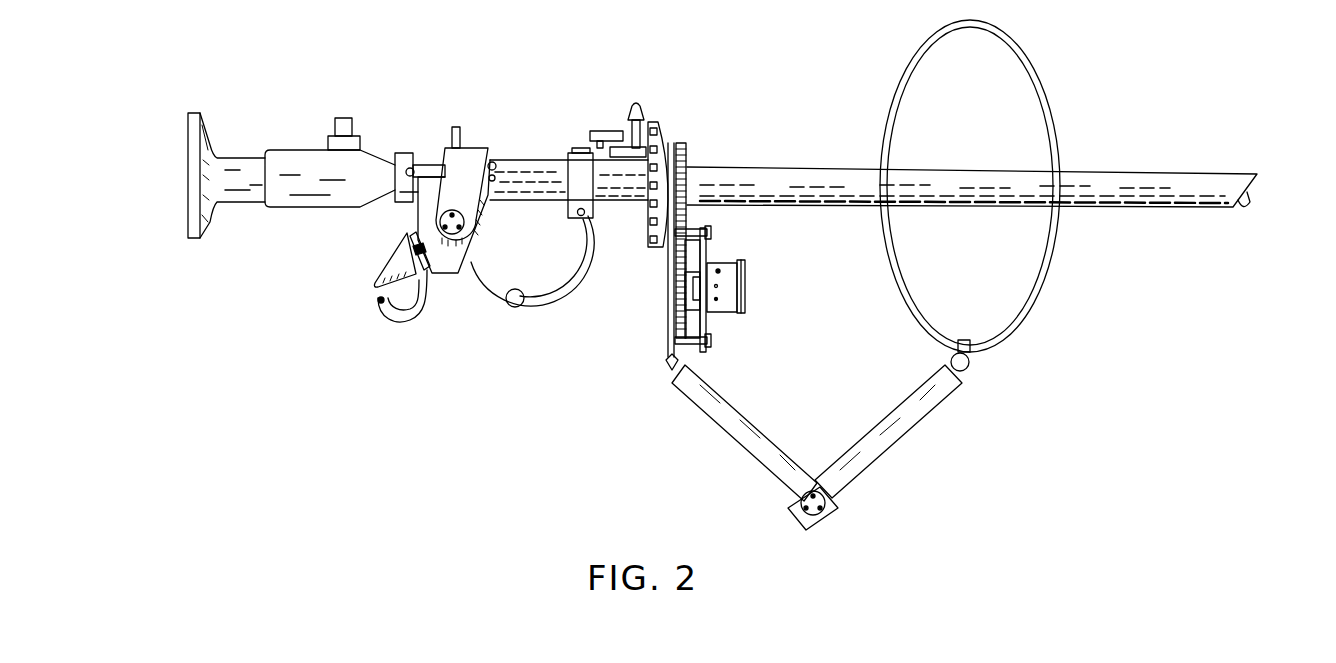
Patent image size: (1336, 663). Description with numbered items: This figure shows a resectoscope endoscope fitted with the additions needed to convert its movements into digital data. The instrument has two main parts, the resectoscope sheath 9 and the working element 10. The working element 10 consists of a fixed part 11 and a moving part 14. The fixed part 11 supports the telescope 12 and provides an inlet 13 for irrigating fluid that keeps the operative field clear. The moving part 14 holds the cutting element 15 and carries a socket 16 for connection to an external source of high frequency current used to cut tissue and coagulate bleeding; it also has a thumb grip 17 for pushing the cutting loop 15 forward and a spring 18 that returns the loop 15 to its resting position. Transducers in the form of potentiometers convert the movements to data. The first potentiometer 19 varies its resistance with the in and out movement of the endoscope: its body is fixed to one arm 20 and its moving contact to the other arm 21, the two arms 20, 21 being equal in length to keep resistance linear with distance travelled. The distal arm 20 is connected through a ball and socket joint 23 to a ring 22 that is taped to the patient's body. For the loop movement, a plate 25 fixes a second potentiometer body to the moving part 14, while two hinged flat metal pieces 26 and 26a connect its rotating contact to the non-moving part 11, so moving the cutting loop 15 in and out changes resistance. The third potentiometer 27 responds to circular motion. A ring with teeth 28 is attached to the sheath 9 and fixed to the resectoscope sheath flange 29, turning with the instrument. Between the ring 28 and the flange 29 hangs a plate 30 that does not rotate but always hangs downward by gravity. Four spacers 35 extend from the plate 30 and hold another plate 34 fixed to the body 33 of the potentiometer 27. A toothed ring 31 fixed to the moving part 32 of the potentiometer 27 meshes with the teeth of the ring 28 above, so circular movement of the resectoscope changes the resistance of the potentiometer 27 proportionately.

The resectoscope sheath 9 is at (1170, 185).
The working element 10 is at (540, 160).
The fixed part 11 is at (400, 153).
The telescope 12 is at (270, 158).
The inlet 13 is at (637, 103).
The moving part 14 is at (448, 262).
The cutting element 15 is at (1248, 205).
The socket 16 is at (459, 130).
The thumb grip 17 is at (408, 320).
The spring 18 is at (524, 303).
The first potentiometer 19 is at (838, 520).
The distal arm 20 is at (898, 430).
The arm 21 is at (775, 466).
The ring 22 is at (1023, 57).
The ball and socket joint 23 is at (972, 360).
The plate 25 is at (468, 160).
The hinged flat metal piece 26 is at (432, 168).
The hinged flat metal piece 26a is at (494, 182).
The third potentiometer 27 is at (745, 288).
The ring with teeth 28 is at (686, 186).
The resectoscope sheath flange 29 is at (663, 148).
The plate 30 is at (672, 262).
The toothed ring 31 is at (681, 297).
The moving part 32 is at (710, 310).
The body 33 is at (725, 268).
The plate 34 is at (703, 325).
The spacers 35 is at (690, 230).